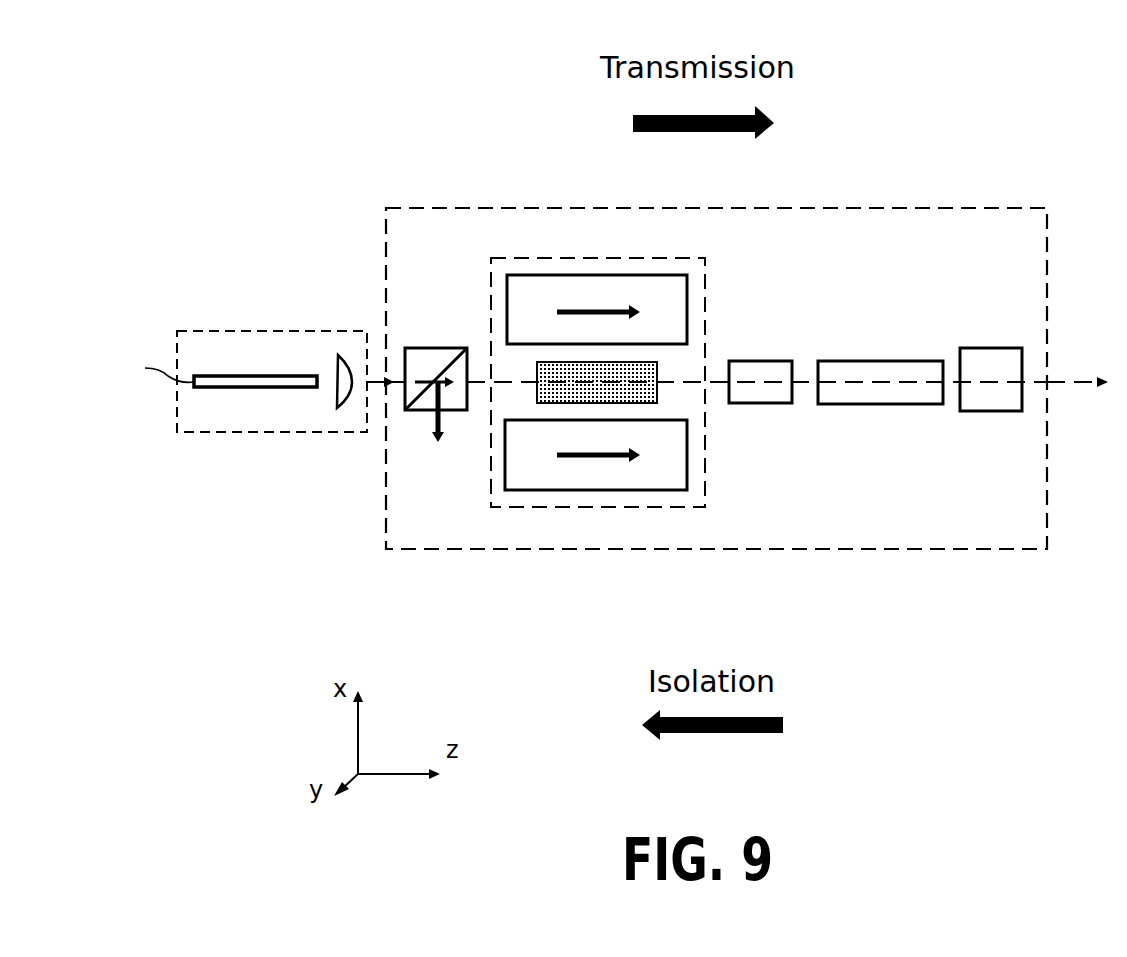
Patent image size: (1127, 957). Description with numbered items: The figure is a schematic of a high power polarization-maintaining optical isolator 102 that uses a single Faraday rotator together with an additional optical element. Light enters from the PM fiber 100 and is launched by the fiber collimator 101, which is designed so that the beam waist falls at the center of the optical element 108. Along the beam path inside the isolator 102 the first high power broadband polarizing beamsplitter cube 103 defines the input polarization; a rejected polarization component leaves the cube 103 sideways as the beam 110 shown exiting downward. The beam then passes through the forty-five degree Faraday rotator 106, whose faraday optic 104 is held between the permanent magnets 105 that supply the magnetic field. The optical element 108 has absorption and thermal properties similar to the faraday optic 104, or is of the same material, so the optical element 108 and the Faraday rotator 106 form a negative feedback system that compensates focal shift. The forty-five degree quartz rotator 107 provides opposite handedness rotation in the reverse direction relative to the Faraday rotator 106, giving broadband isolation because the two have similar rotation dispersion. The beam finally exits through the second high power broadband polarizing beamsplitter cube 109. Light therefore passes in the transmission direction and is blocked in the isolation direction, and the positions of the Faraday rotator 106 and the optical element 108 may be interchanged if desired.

The PM fiber 100 is at (148, 386).
The fiber collimator 101 is at (272, 326).
The optical isolator 102 is at (572, 206).
The high power broadband polarizing beamsplitter cube 103 is at (436, 346).
The faraday optic 104 is at (537, 360).
The permanent magnets 105 is at (672, 419).
The 45° Faraday rotator 106 is at (600, 255).
The 45° quartz rotator 107 is at (765, 358).
The optical element 108 is at (851, 347).
The high power broadband polarizing beamsplitter cube 109 is at (983, 346).
The rejected beam 110 is at (430, 433).